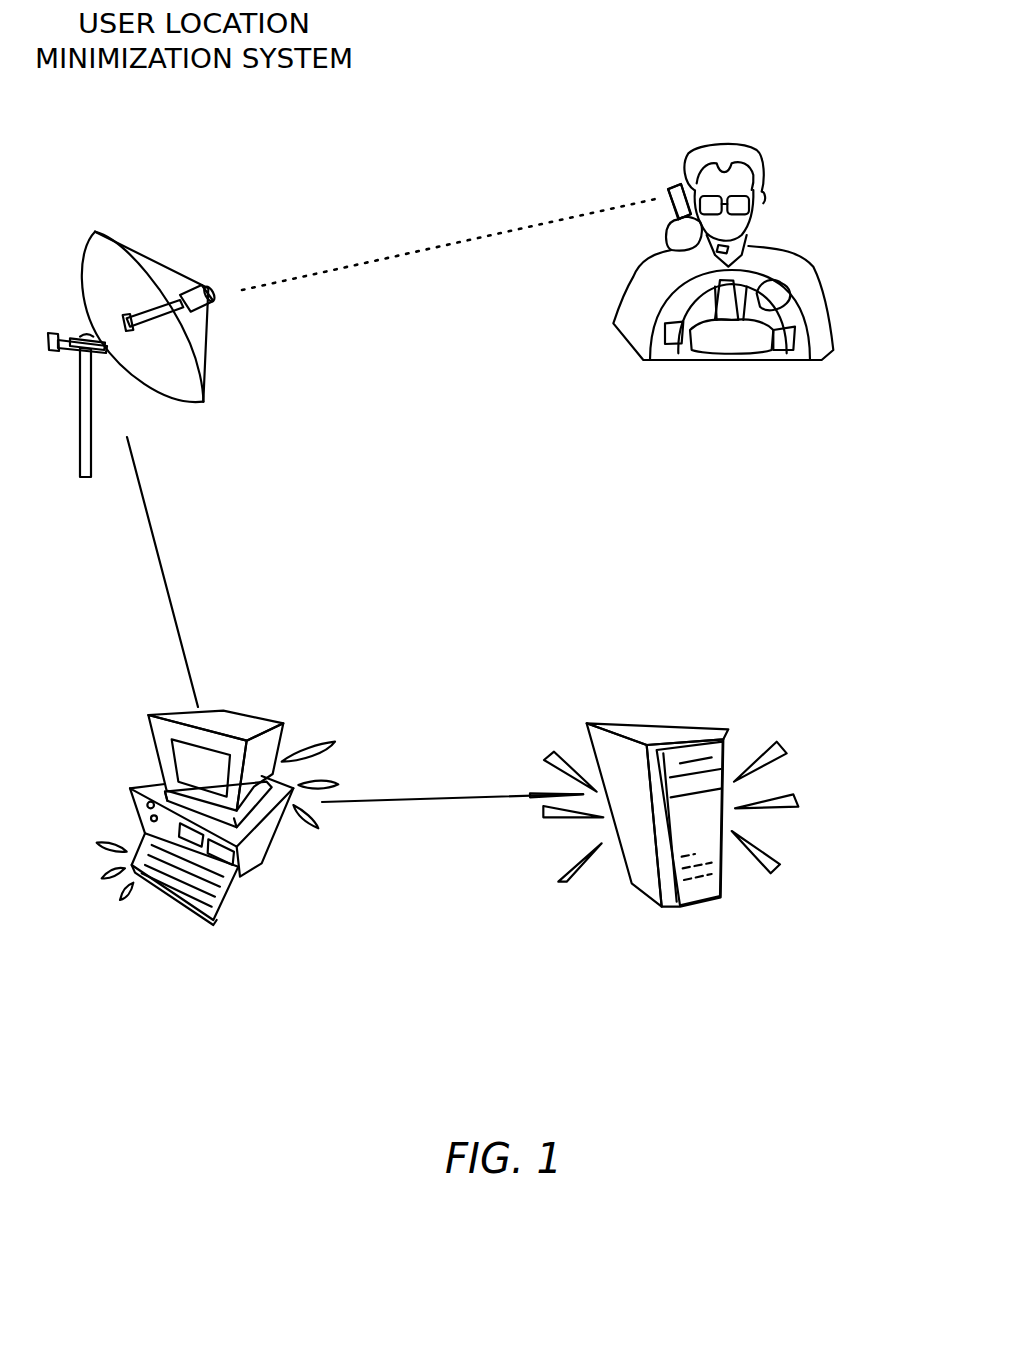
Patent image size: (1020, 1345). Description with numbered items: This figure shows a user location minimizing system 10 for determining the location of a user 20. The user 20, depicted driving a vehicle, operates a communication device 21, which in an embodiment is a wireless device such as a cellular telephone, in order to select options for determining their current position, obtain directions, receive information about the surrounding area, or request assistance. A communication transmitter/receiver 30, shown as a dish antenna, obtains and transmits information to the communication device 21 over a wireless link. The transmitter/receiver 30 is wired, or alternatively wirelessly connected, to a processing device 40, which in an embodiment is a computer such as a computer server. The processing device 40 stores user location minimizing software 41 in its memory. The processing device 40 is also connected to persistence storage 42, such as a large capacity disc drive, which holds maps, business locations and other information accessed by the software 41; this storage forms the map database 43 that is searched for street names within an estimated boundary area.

The user location minimizing system 10 is at (393, 438).
The user 20 is at (726, 211).
The communication device 21 is at (627, 174).
The communication transmitter/receiver 30 is at (176, 328).
The processing device 40 is at (227, 774).
The user location minimizing software 41 is at (287, 1012).
The persistence storage 42 is at (664, 763).
The database 43 is at (768, 959).